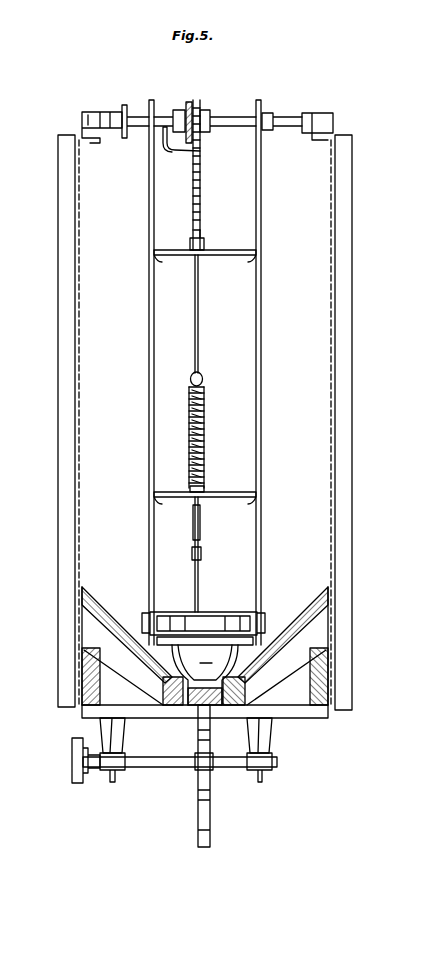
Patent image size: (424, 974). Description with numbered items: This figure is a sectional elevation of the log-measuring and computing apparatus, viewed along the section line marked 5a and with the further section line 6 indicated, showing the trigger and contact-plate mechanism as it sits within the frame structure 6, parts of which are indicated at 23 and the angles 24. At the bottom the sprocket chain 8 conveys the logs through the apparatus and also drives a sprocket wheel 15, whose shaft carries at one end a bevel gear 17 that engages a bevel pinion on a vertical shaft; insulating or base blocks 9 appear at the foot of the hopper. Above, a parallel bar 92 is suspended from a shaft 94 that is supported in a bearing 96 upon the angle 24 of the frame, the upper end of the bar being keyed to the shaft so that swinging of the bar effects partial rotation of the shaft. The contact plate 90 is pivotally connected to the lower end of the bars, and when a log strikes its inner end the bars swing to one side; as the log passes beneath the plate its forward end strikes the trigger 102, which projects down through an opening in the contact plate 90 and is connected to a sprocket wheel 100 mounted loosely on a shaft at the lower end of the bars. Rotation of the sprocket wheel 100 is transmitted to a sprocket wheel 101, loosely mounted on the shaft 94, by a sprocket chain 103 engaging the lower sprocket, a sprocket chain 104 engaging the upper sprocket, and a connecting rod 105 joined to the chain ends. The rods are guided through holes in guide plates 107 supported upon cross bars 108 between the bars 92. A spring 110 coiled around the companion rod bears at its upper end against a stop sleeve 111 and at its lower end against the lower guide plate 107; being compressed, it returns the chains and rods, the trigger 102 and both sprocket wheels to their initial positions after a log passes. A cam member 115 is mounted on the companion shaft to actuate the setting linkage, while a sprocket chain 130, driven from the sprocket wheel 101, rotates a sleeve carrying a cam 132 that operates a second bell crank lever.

The section line 5a- 5a is at (158, 85).
The frame structure 6 is at (178, 85).
The sprocket chain 8 is at (240, 657).
The insulating block 9 is at (256, 650).
The sprocket wheel 15 is at (198, 805).
The bevel gear 17 is at (72, 748).
The frame structure part 23 is at (58, 492).
The angle 24 is at (85, 142).
The contact plate 90 is at (205, 646).
The parallel bar 92 is at (149, 343).
The shaft 94 is at (296, 115).
The bearing 96 is at (88, 110).
The sprocket wheel 100 is at (205, 612).
The sprocket wheel 101 is at (200, 110).
The trigger 102 is at (145, 648).
The sprocket chain 103 is at (199, 582).
The sprocket chain 104 is at (200, 168).
The connecting rod 105 is at (199, 295).
The guide plate 107 is at (205, 250).
The cross bar 108 is at (165, 248).
The spring 110 is at (190, 403).
The stop sleeve 111 is at (203, 378).
The cam member 115 is at (129, 134).
The sprocket chain 130 is at (185, 108).
The cam 132 is at (200, 151).